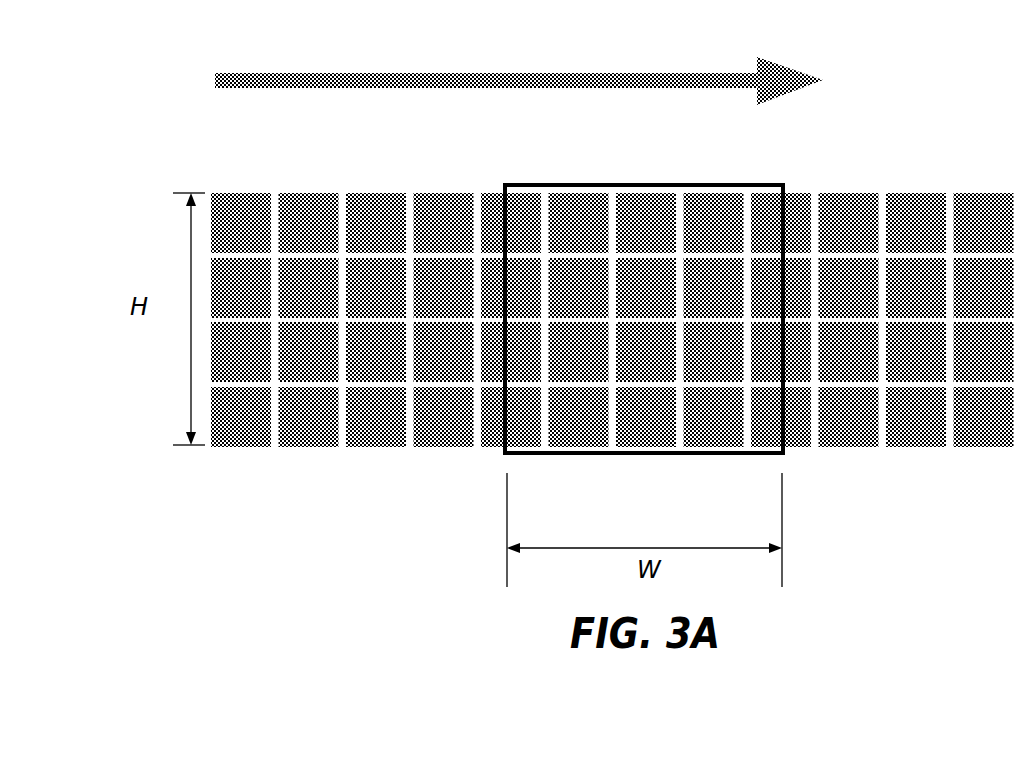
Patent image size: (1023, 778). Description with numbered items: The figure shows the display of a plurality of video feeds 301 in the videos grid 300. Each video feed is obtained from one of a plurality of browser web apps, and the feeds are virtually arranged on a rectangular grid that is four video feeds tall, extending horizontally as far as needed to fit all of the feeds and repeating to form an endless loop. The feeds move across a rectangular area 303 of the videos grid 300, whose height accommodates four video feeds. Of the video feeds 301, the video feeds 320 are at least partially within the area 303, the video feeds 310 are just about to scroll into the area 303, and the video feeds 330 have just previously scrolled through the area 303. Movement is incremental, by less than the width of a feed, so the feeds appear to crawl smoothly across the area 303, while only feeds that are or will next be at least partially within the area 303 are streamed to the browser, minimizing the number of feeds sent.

The videos grid 300 is at (544, 123).
The video feeds 301 is at (569, 345).
The area 303 is at (695, 183).
The video feeds 310 is at (466, 472).
The video feeds 320 is at (802, 472).
The video feeds 330 is at (1014, 472).